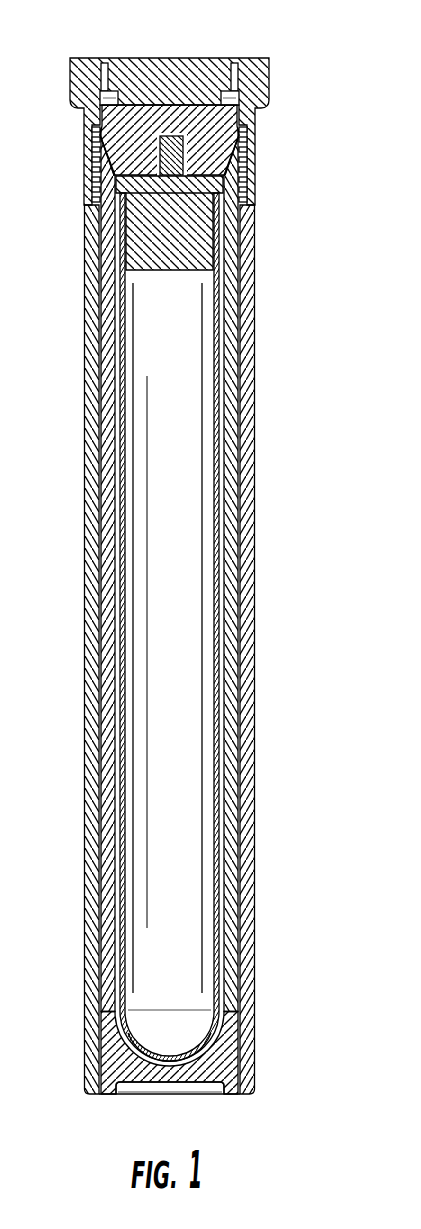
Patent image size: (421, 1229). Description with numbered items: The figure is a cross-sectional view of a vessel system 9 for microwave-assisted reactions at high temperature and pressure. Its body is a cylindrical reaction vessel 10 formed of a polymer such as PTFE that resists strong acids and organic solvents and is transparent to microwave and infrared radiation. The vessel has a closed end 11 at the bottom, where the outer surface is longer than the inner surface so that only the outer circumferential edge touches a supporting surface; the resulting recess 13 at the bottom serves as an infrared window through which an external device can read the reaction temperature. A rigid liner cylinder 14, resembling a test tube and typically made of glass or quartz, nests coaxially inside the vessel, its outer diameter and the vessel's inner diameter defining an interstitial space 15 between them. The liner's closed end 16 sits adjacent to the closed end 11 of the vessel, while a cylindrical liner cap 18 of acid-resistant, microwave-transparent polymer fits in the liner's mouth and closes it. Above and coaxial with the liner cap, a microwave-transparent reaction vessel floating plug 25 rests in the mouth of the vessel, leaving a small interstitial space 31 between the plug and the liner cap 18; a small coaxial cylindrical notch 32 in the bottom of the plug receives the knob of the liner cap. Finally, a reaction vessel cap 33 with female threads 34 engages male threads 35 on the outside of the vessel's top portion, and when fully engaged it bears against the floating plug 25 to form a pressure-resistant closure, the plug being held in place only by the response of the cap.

The vessel system 9 is at (345, 100).
The cylindrical reaction vessel 10 is at (228, 290).
The closed end 11 is at (228, 1041).
The recess 13 is at (202, 1076).
The rigid liner cylinder 14 is at (210, 355).
The interstitial space 15 is at (210, 434).
The closed end 16 is at (152, 1050).
The cylindrical liner cap 18 is at (194, 215).
The reaction vessel floating plug 25 is at (250, 134).
The interstitial space 31 is at (177, 135).
The cylindrical notch 32 is at (92, 142).
The reaction vessel cap 33 is at (262, 70).
The female threads 34 is at (250, 152).
The male threads 35 is at (78, 162).